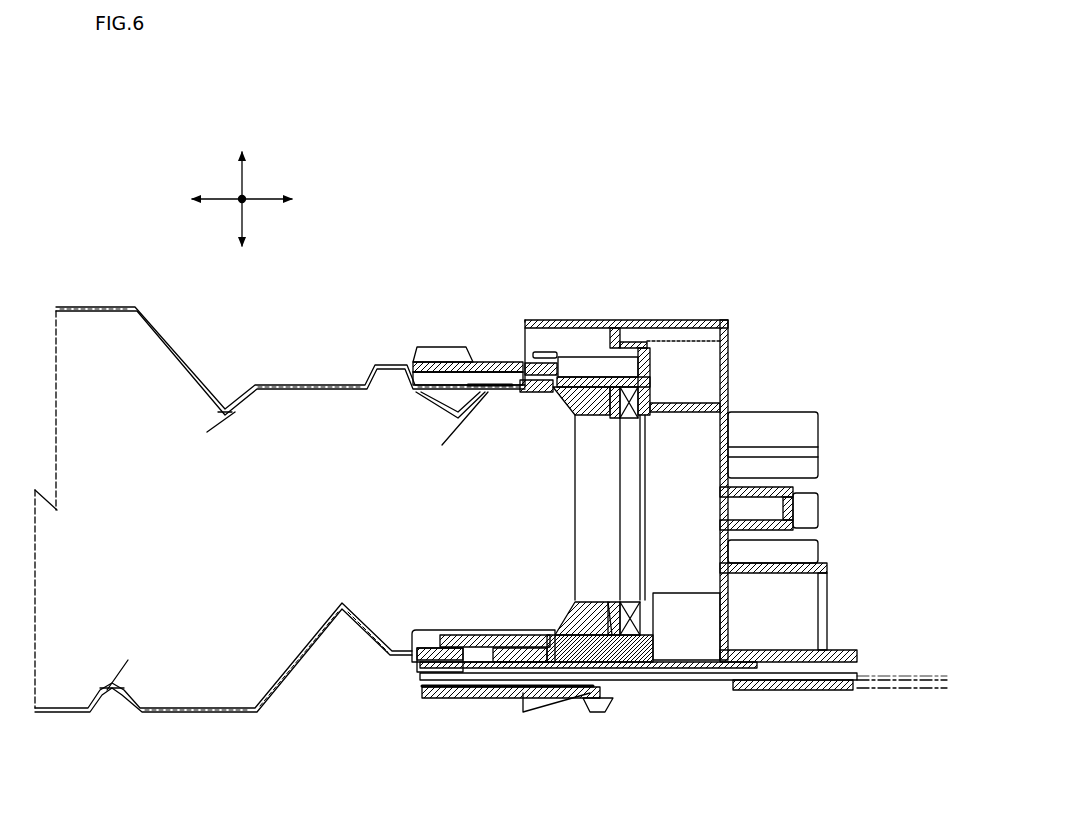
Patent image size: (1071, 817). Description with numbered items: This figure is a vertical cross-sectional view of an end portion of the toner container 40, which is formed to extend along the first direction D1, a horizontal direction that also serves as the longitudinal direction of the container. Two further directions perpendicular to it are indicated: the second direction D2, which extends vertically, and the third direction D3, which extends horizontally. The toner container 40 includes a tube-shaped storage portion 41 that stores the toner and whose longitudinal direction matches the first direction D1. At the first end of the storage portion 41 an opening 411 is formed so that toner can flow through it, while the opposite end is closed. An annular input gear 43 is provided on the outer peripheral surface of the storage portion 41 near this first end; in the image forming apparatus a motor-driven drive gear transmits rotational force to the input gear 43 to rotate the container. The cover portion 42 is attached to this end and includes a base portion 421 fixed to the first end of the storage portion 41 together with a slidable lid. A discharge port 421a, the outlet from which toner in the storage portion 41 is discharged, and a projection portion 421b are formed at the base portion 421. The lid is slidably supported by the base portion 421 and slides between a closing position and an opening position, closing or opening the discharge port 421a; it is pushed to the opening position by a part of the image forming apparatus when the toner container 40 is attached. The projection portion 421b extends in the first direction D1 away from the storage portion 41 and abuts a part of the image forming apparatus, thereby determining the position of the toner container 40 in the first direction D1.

The toner container 40 is at (688, 230).
The storage portion 41 is at (110, 307).
The opening 411 is at (637, 418).
The cover portion 42 is at (726, 296).
The base portion 421 is at (633, 370).
The discharge port 421a is at (720, 650).
The projection portion 421b is at (793, 505).
The input gear 43 is at (432, 345).
The first direction D1 is at (218, 198).
The second direction D2 is at (245, 176).
The third direction D3 is at (246, 203).